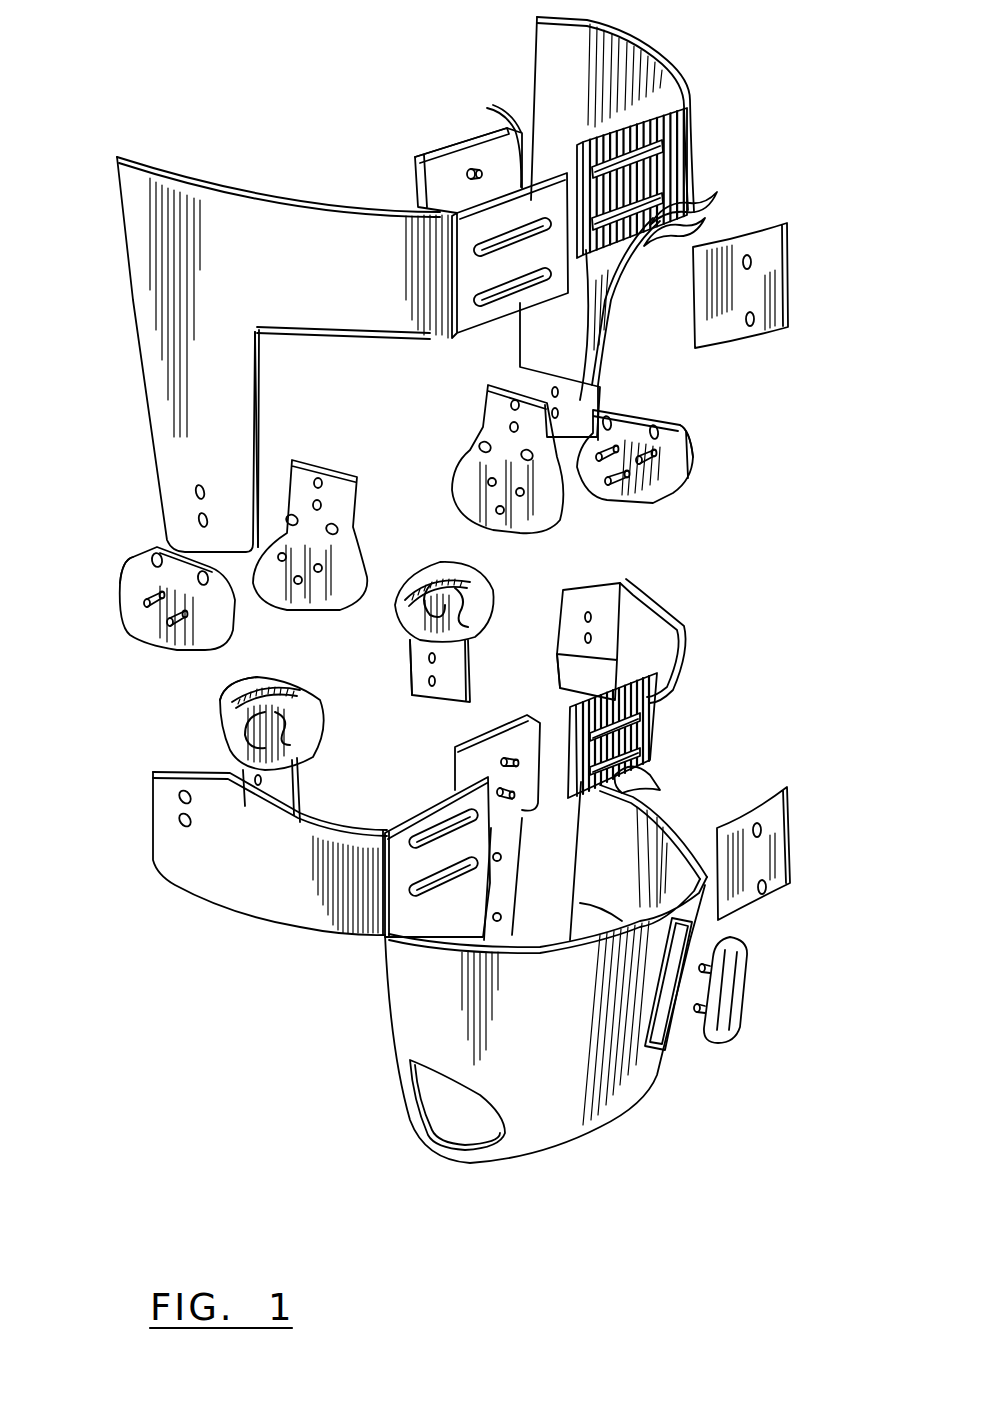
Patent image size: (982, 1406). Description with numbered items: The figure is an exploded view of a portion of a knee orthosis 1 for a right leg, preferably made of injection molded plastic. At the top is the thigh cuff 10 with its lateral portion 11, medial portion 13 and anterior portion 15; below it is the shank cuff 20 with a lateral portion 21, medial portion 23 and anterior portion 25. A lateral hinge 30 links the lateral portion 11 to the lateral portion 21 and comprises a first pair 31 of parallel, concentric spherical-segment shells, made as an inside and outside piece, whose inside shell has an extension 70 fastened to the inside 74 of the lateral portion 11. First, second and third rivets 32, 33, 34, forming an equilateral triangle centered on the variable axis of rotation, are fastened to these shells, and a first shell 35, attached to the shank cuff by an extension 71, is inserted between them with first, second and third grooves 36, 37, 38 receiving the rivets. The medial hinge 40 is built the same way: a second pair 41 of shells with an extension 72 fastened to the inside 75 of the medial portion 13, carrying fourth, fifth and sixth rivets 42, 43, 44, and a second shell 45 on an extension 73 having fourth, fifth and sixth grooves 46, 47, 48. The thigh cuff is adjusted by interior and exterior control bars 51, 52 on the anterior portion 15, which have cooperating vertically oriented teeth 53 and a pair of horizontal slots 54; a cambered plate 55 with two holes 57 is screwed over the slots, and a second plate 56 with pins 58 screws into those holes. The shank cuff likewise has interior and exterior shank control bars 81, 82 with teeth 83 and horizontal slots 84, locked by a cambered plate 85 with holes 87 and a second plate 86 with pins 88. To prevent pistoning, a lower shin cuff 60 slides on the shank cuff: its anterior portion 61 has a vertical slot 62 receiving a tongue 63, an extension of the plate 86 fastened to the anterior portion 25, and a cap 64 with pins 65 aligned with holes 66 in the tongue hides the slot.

The knee orthosis 1 is at (213, 123).
The thigh cuff 10 is at (153, 361).
The lateral portion of thigh cuff 11 is at (170, 440).
The medial portion of thigh cuff 13 is at (597, 323).
The anterior portion of thigh cuff 15 is at (317, 227).
The shank cuff 20 is at (103, 1189).
The lateral portion of shank cuff 21 is at (200, 890).
The medial portion of shank cuff 23 is at (640, 620).
The anterior portion of shank cuff 25 is at (317, 920).
The lateral hinge 30 is at (100, 500).
The first pair of shells 31 is at (295, 585).
The first rivet 32 is at (172, 545).
The second rivet 33 is at (200, 642).
The third rivet 34 is at (143, 637).
The first shell 35 is at (222, 705).
The first groove 36 is at (300, 683).
The second groove 37 is at (297, 740).
The third groove 38 is at (240, 747).
The medial hinge 40 is at (510, 617).
The second pair of shells 41 is at (537, 533).
The fourth rivet 42 is at (613, 450).
The fifth rivet 43 is at (685, 425).
The sixth rivet 44 is at (630, 490).
The second shell 45 is at (482, 577).
The fourth groove 46 is at (460, 563).
The fifth groove 47 is at (410, 642).
The sixth groove 48 is at (403, 577).
The interior control bar 51 is at (580, 105).
The exterior control bar 52 is at (452, 190).
The first set of cooperating teeth 53 is at (472, 168).
The horizontal slots 54 is at (653, 200).
The plate 55 is at (773, 240).
The second plate 56 is at (432, 150).
The holes 57 is at (755, 318).
The pins 58 is at (460, 133).
The lower shin cuff 60 is at (553, 1095).
The anterior portion of lower shin cuff 61 is at (640, 1080).
The vertical slot 62 is at (672, 1030).
The tongue 63 is at (503, 887).
The cap 64 is at (748, 1000).
The pins 65 is at (725, 945).
The holes 66 is at (502, 857).
The extension 70 is at (333, 467).
The extension 71 is at (283, 793).
The extension 72 is at (487, 400).
The extension 73 is at (500, 620).
The inside of lateral portion 74 is at (262, 490).
The inside of medial portion 75 is at (533, 385).
The interior shank control bar 81 is at (600, 672).
The exterior shank control bar 82 is at (398, 940).
The second set of cooperating teeth 83 is at (657, 783).
The horizontal slots 84 is at (655, 745).
The plate 85 is at (432, 815).
The second plate 86 is at (483, 760).
The holes 87 is at (765, 887).
The pins 88 is at (517, 766).